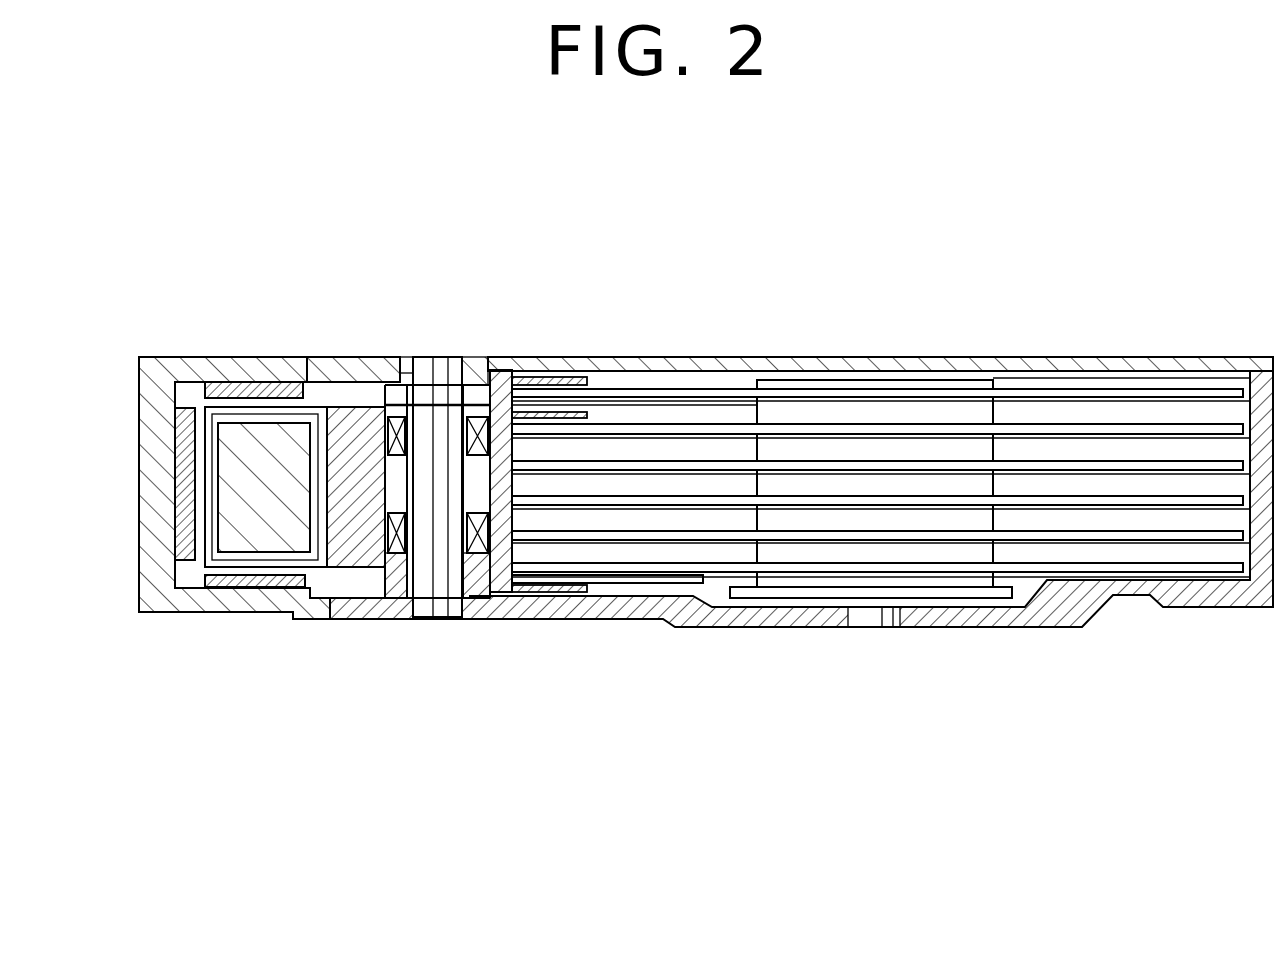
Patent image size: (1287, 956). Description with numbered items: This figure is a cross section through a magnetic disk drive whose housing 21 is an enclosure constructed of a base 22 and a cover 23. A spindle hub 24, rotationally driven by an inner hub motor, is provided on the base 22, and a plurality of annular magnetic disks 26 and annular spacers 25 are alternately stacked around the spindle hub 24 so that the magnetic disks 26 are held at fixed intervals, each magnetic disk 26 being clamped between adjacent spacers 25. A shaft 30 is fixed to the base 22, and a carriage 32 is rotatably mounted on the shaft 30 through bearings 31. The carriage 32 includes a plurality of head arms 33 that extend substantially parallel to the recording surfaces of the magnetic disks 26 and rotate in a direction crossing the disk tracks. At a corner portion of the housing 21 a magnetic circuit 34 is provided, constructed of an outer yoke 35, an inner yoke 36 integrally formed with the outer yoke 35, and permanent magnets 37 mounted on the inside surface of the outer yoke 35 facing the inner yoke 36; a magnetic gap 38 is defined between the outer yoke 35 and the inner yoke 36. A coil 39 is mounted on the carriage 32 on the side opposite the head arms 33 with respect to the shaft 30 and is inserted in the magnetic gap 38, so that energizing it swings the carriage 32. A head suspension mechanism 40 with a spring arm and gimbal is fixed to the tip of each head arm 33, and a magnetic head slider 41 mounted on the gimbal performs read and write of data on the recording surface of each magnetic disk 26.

The housing 21 is at (859, 640).
The base 22 is at (960, 620).
The cover 23 is at (770, 355).
The spindle hub 24 is at (937, 362).
The annular spacers 25 is at (855, 420).
The annular magnetic disks 26 is at (1118, 395).
The shaft 30 is at (437, 617).
The bearings 31 is at (476, 412).
The carriage 32 is at (348, 392).
The head arms 33 is at (563, 408).
The magnetic circuit 34 is at (212, 347).
The outer yoke 35 is at (176, 610).
The inner yoke 36 is at (290, 535).
The permanent magnets 37 is at (268, 382).
The magnetic gap 38 is at (205, 455).
The coil 39 is at (186, 370).
The head suspension mechanism 40 is at (633, 362).
The magnetic head slider 41 is at (686, 390).